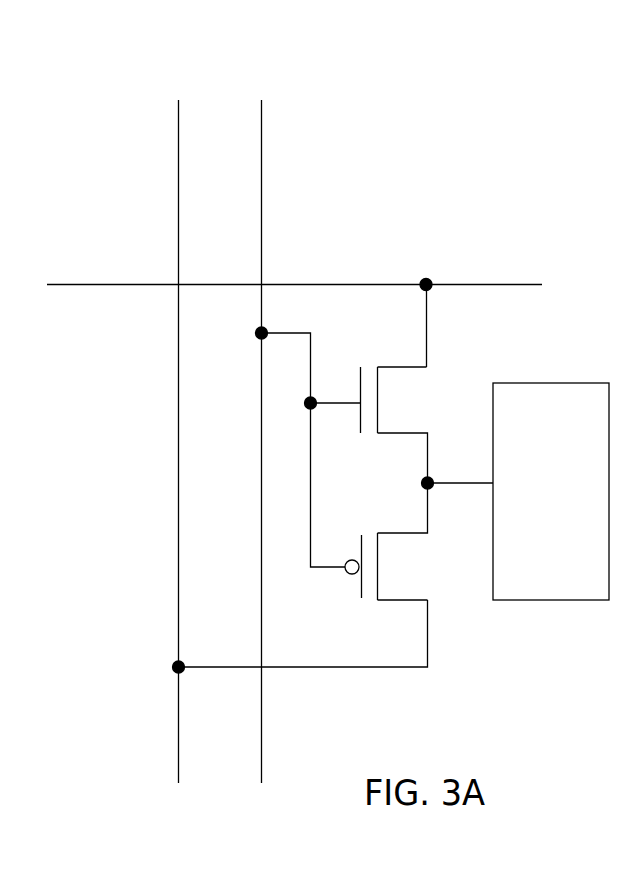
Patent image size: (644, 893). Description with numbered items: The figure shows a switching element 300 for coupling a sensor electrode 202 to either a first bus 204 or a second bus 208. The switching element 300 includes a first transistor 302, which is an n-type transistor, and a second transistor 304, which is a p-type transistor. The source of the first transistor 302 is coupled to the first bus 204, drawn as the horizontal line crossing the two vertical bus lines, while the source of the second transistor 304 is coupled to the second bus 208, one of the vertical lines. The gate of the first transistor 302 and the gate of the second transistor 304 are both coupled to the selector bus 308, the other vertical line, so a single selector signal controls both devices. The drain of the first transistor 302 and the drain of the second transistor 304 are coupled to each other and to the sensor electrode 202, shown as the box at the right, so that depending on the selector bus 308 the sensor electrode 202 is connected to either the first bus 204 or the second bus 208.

The switching element 300 is at (366, 128).
The second bus 208 is at (178, 152).
The selector bus 308 is at (262, 152).
The first bus 204 is at (146, 284).
The first transistor 302 is at (426, 328).
The second transistor 304 is at (428, 640).
The sensor electrode 202 is at (516, 491).